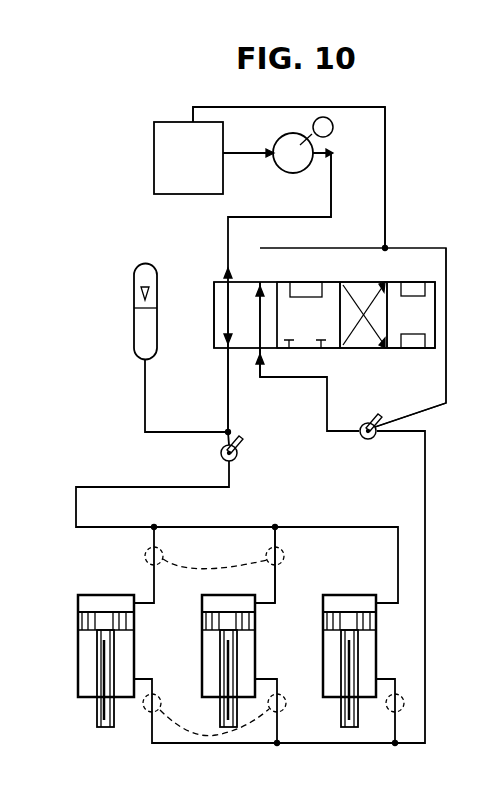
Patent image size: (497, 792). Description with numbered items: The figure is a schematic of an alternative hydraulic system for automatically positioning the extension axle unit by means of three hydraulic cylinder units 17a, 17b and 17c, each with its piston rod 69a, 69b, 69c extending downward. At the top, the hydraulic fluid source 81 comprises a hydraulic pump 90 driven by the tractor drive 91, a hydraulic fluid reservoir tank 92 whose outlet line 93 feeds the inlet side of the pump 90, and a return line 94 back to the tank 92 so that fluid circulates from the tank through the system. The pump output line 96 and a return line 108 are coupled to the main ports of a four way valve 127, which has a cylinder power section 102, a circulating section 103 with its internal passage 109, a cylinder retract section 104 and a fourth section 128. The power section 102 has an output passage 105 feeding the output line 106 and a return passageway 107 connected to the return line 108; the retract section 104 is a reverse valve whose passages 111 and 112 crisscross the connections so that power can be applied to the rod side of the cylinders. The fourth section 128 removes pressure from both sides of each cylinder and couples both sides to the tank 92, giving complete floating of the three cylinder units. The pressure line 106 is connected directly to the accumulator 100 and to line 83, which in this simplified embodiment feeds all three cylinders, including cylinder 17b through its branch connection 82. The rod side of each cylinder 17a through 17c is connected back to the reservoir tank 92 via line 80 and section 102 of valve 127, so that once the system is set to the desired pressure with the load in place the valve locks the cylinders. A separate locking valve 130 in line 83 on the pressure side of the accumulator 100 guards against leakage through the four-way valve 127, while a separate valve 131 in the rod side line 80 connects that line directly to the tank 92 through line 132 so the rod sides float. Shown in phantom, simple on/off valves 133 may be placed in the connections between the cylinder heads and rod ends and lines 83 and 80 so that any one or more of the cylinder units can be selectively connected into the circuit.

The hydraulic cylinder unit 17a is at (323, 643).
The hydraulic cylinder unit 17b is at (202, 643).
The hydraulic cylinder unit 17c is at (78, 645).
The piston rod 69a is at (323, 679).
The piston rod 69b is at (202, 679).
The piston rod 69c is at (85, 677).
The rod side line 80 is at (313, 743).
The hydraulic fluid source 81 is at (206, 224).
The supply line 82 is at (284, 562).
The line 83 is at (185, 528).
The hydraulic pump 90 is at (283, 142).
The tractor drive 91 is at (333, 127).
The hydraulic fluid reservoir tank 92 is at (201, 184).
The outlet line 93 is at (238, 155).
The return line 94 is at (197, 110).
The pump output line 96 is at (331, 189).
The accumulator 100 is at (134, 330).
The cylinder power section 102 is at (225, 280).
The circulating section 103 is at (327, 278).
The cylinder retract section 104 is at (374, 263).
The output passage 105 is at (229, 301).
The output line 106 is at (228, 384).
The return passageway 107 is at (260, 300).
The return line 108 is at (385, 175).
The blocked port 109 is at (320, 298).
The passage 111 is at (362, 315).
The passage 112 is at (375, 330).
The four way valve 127 is at (210, 340).
The fourth section 128 is at (395, 352).
The locking valve 130 is at (238, 461).
The valve 131 is at (372, 441).
The line 132 is at (432, 407).
The on/off valves 133 is at (273, 641).